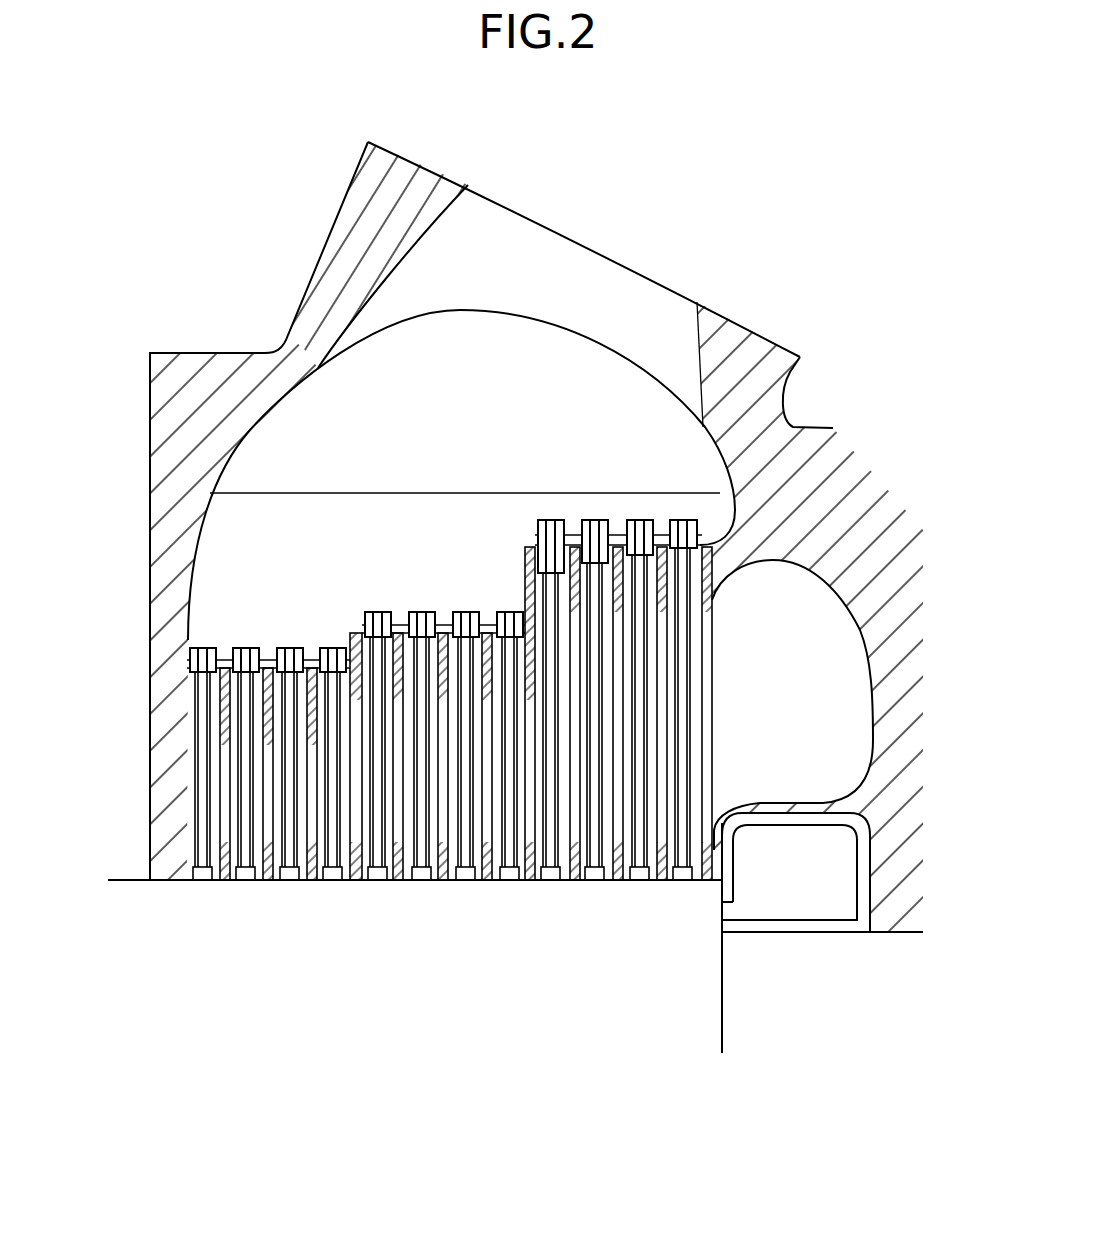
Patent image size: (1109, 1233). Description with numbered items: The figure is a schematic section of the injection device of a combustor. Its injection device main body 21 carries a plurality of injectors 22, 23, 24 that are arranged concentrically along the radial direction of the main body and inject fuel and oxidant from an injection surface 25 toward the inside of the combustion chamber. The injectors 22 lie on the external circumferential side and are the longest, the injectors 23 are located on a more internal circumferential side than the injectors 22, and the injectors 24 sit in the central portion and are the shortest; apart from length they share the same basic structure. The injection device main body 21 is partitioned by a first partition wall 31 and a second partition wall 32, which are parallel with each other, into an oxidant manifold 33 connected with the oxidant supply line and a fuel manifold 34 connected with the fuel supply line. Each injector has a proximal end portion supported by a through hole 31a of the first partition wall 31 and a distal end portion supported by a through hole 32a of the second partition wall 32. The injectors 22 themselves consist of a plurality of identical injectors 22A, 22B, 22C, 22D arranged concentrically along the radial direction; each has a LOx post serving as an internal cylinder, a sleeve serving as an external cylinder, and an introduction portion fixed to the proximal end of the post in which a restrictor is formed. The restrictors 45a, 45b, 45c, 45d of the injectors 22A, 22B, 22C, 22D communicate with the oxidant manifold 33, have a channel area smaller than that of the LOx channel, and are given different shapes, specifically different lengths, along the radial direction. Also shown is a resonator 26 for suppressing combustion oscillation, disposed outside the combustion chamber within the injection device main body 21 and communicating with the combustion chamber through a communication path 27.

The injection device main body 21 is at (145, 404).
The injectors 22 is at (779, 590).
The injector 22A is at (713, 557).
The injector 22B is at (668, 588).
The injector 22C is at (623, 638).
The injector 22D is at (578, 713).
The injectors 23 is at (348, 616).
The injectors 24 is at (263, 780).
The injection surface 25 is at (290, 883).
The resonator 26 is at (830, 911).
The communication path 27 is at (728, 908).
The first partition wall 31 is at (641, 594).
The through hole 31a is at (586, 560).
The second partition wall 32 is at (663, 878).
The through hole 32a is at (598, 880).
The oxidant manifold 33 is at (355, 554).
The fuel manifold 34 is at (793, 711).
The restrictor 45a is at (683, 520).
The restrictor 45b is at (645, 520).
The restrictor 45c is at (636, 520).
The restrictor 45d is at (548, 520).